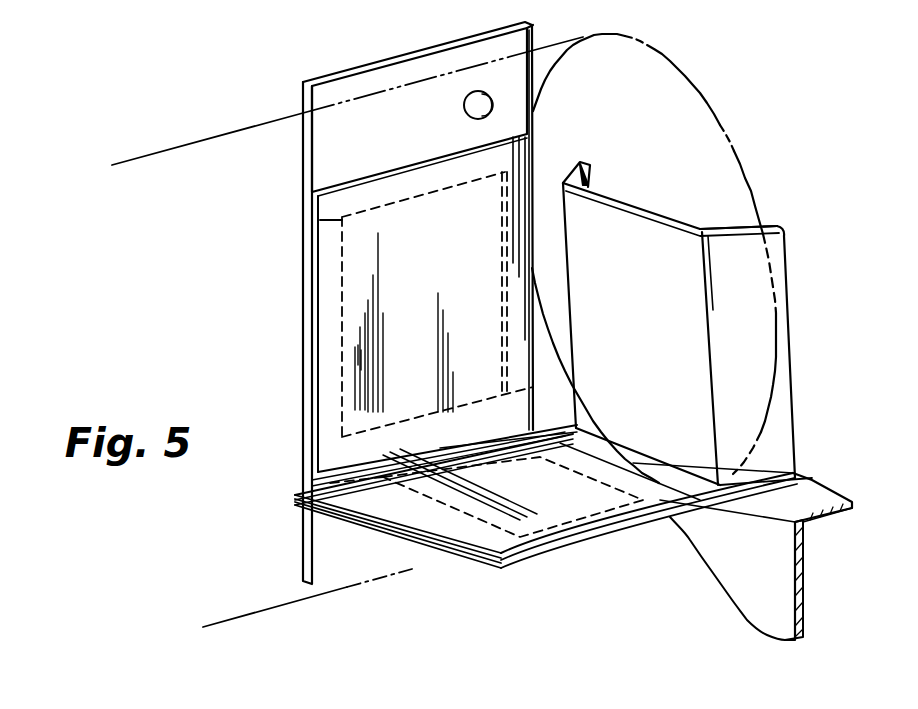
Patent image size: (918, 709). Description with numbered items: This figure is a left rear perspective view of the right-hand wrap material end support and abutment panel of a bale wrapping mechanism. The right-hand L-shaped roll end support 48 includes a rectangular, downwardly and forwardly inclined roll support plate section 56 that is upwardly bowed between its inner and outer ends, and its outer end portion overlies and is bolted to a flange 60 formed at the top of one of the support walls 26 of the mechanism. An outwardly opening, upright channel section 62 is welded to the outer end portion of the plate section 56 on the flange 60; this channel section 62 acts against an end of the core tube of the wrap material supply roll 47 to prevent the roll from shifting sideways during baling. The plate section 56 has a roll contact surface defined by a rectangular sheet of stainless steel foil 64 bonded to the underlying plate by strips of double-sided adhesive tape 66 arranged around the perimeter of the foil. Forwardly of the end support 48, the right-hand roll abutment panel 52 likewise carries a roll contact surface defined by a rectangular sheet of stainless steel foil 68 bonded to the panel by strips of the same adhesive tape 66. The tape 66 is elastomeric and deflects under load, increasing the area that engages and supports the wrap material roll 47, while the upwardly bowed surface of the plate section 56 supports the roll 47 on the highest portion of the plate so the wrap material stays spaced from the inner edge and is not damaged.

The support wall 26 is at (750, 592).
The wrap material supply roll 47 is at (717, 120).
The right-hand L-shaped roll end support 48 is at (657, 210).
The right-hand roll abutment panel 52 is at (330, 135).
The roll support plate section 56 is at (465, 560).
The flange 60 is at (792, 502).
The upright channel section 62 is at (783, 266).
The stainless steel foil 64 is at (507, 525).
The double-sided adhesive tape 66 is at (500, 243).
The stainless steel foil 68 is at (337, 340).